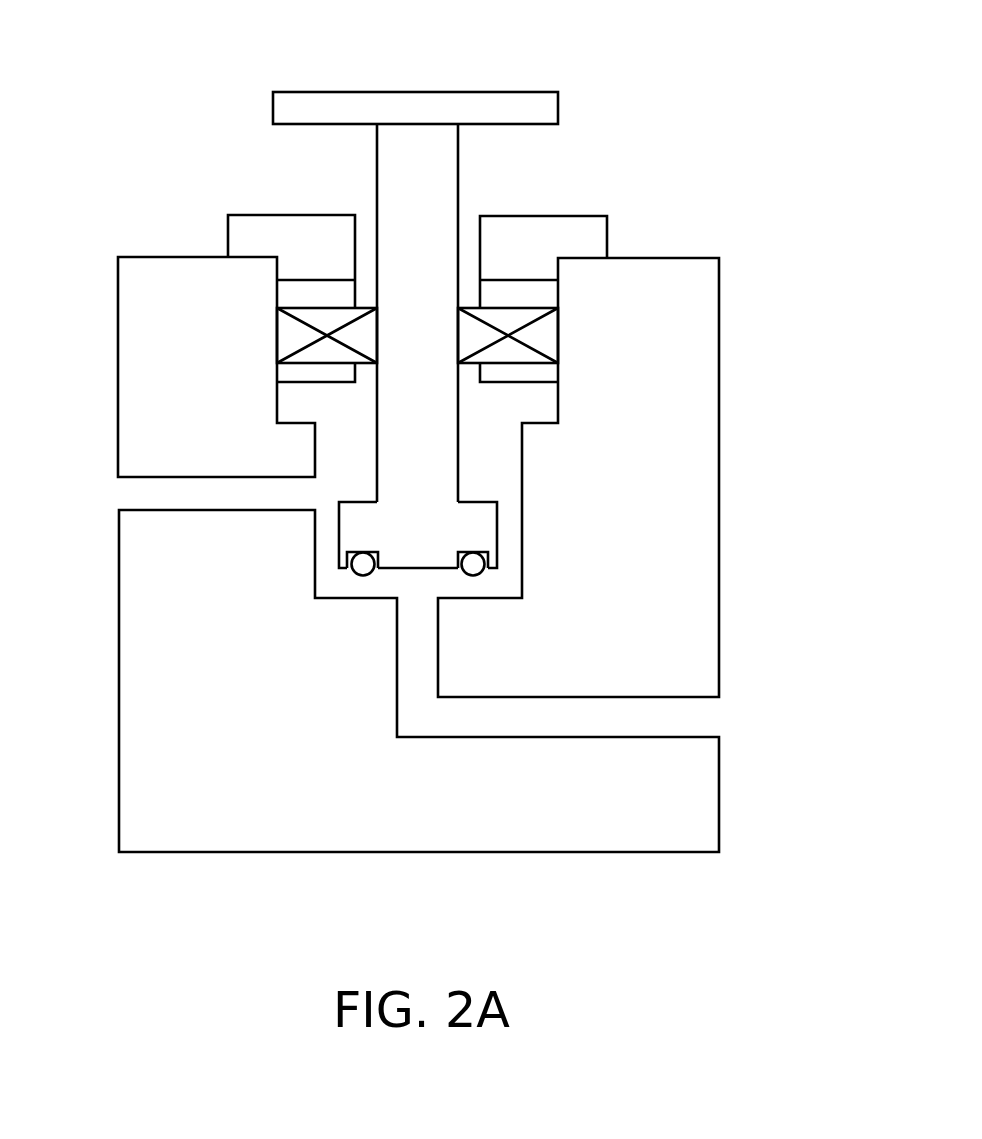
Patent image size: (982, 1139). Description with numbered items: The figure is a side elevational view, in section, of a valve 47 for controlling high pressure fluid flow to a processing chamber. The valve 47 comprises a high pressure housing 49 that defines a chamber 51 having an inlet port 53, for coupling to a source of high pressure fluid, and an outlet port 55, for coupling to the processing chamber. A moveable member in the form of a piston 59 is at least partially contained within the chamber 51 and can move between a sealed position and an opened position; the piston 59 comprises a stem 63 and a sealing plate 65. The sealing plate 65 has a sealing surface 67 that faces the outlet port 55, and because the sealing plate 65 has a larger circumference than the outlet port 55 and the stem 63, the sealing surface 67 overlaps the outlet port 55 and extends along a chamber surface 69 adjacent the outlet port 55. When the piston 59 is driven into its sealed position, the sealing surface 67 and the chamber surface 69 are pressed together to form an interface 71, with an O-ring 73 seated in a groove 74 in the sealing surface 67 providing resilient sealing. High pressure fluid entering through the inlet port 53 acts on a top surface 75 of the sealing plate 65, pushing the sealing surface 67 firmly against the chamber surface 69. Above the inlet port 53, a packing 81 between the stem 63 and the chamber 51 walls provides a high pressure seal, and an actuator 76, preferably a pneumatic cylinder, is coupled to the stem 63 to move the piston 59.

The valve 47 is at (702, 85).
The actuator 76 is at (535, 117).
The piston 59 is at (462, 189).
The packing 81 is at (558, 335).
The stem 63 is at (442, 381).
The chamber 51 is at (567, 397).
The high pressure housing 49 is at (720, 320).
The top surface 75 is at (352, 511).
The sealing plate 65 is at (444, 550).
The groove 74 is at (358, 552).
The O-ring 73 is at (364, 577).
The interface 71 is at (483, 598).
The sealing surface 67 is at (415, 575).
The chamber surface 69 is at (333, 603).
The outlet port 55 is at (449, 683).
The inlet port 53 is at (195, 511).